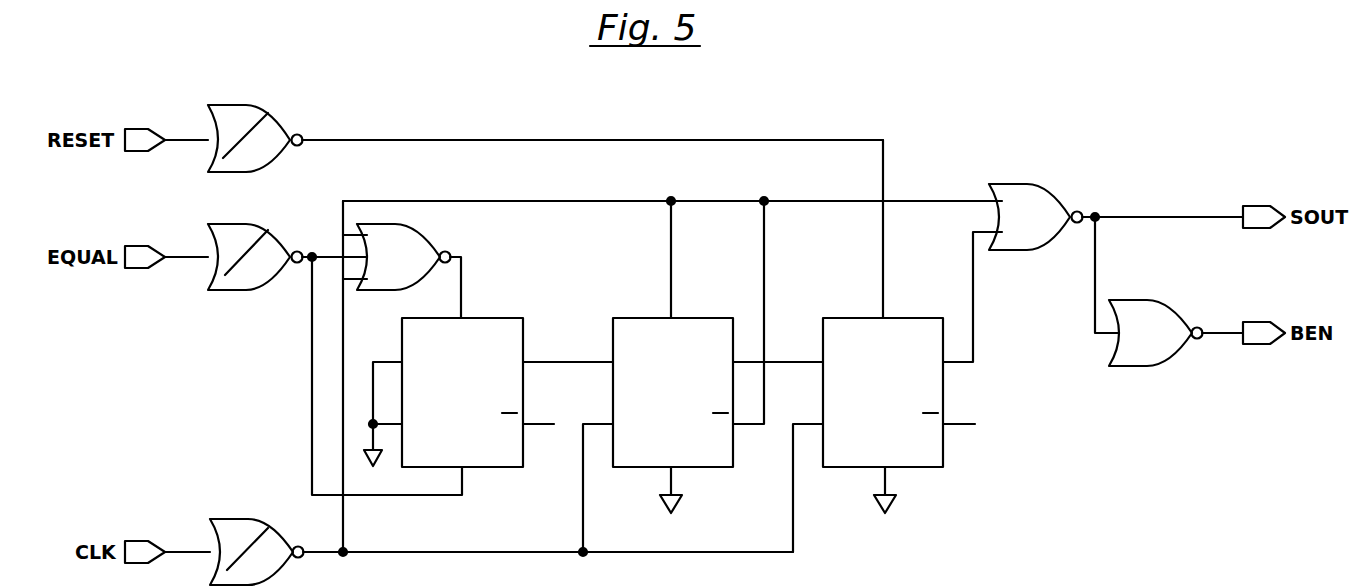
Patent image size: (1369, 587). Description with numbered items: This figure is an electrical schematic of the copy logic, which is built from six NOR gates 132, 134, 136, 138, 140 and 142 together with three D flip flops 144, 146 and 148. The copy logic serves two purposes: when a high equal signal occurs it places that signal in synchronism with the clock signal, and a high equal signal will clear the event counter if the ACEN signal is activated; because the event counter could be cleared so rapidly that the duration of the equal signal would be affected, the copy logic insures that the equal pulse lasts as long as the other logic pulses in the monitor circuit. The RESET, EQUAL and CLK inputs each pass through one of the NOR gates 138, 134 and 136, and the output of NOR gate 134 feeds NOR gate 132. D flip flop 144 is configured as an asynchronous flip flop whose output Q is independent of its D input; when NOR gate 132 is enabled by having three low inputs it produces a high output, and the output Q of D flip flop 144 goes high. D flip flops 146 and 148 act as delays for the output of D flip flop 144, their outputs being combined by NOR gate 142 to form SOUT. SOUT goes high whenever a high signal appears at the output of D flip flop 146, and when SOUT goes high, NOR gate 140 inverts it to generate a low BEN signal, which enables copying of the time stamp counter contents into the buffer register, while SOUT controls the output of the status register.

The NOR gate 132 is at (425, 236).
The NOR gate 134 is at (268, 230).
The NOR gate 136 is at (234, 518).
The NOR gate 138 is at (268, 113).
The NOR gate 140 is at (1160, 298).
The NOR gate 142 is at (1038, 185).
The D flip flop 144 is at (493, 318).
The D flip flop 146 is at (680, 318).
The D flip flop 148 is at (903, 318).